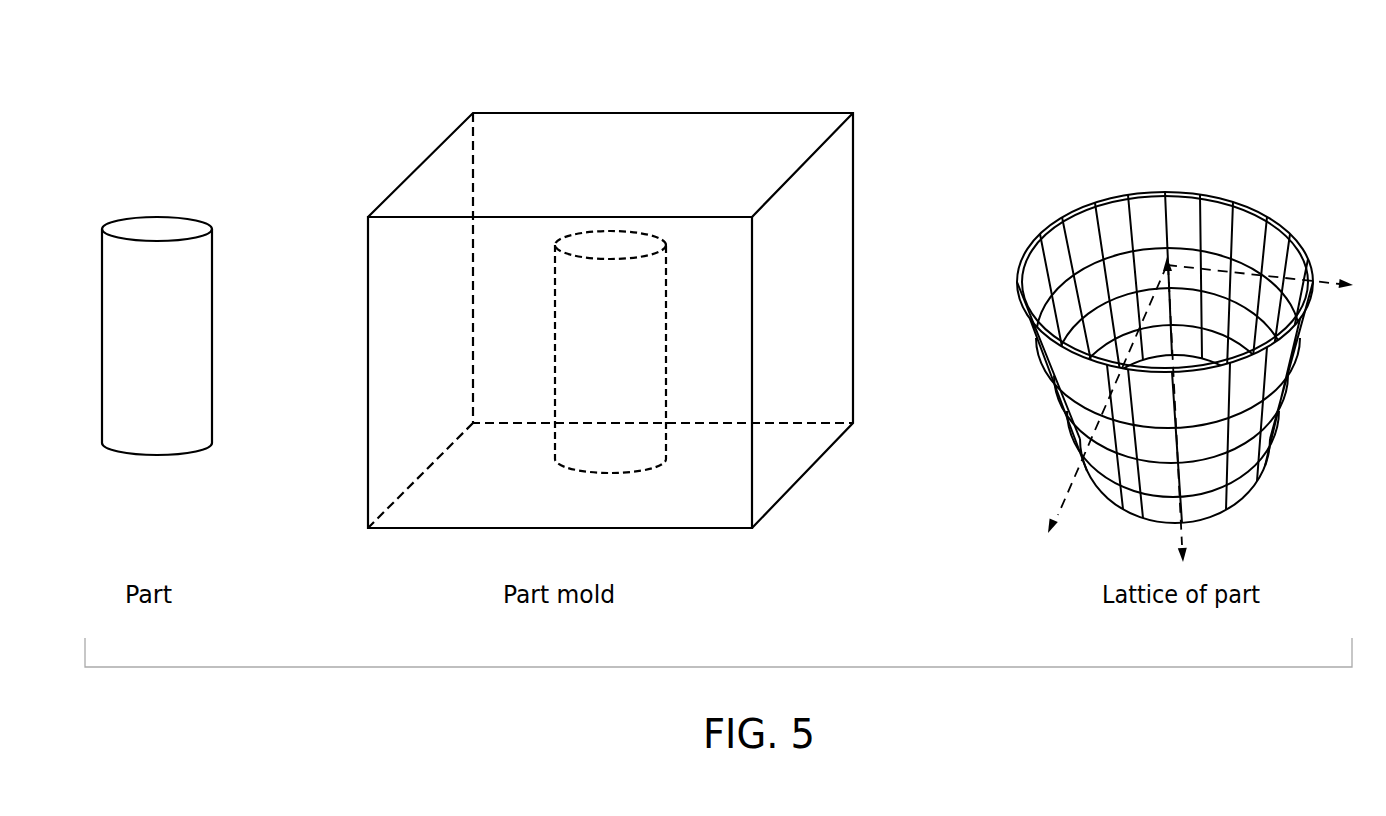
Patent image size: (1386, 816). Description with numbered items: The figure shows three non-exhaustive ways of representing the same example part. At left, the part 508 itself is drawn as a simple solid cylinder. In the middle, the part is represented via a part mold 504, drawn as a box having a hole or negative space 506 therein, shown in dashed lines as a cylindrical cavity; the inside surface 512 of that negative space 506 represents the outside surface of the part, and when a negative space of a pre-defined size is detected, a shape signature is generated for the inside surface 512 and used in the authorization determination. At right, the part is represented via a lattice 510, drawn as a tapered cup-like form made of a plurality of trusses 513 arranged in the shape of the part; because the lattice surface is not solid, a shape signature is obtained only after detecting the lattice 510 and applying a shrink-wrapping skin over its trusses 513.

The part mold 504 is at (816, 112).
The negative space 506 is at (642, 334).
The part 508 is at (154, 216).
The lattice 510 is at (1185, 345).
The inside surface 512 is at (606, 231).
The trusses 513 is at (1140, 192).